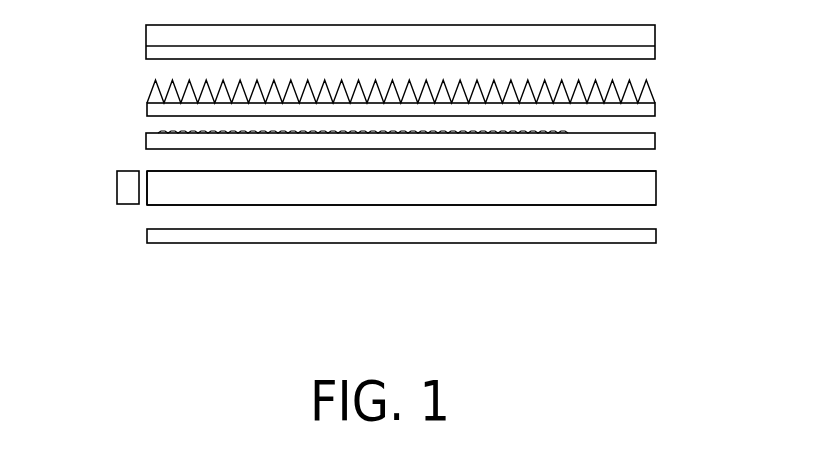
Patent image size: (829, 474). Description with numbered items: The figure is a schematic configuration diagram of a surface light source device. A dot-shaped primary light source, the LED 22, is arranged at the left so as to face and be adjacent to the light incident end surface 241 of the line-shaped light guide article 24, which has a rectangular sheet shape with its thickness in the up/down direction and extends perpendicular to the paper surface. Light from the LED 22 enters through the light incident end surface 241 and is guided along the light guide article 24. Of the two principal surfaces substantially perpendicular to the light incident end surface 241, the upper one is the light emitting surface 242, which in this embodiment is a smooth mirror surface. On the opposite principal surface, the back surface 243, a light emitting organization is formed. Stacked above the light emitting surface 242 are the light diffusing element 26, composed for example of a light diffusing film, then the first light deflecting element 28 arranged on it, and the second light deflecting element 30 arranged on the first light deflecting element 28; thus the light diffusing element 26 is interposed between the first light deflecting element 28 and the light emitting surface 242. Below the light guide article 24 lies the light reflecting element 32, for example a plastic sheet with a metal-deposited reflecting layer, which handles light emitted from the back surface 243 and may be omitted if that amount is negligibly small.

The LED 22 is at (117, 188).
The light guide article 24 is at (656, 183).
The light incident end surface 241 is at (147, 190).
The light emitting surface 242 is at (158, 170).
The back surface 243 is at (167, 206).
The light diffusing element 26 is at (656, 141).
The first light deflecting element 28 is at (656, 104).
The second light deflecting element 30 is at (655, 47).
The light reflecting element 32 is at (656, 232).